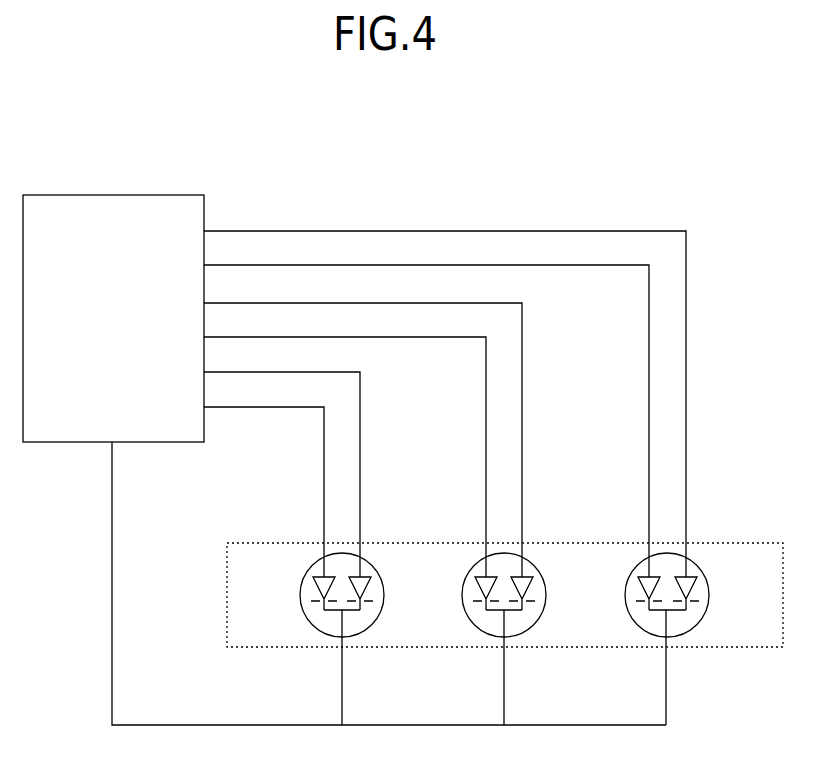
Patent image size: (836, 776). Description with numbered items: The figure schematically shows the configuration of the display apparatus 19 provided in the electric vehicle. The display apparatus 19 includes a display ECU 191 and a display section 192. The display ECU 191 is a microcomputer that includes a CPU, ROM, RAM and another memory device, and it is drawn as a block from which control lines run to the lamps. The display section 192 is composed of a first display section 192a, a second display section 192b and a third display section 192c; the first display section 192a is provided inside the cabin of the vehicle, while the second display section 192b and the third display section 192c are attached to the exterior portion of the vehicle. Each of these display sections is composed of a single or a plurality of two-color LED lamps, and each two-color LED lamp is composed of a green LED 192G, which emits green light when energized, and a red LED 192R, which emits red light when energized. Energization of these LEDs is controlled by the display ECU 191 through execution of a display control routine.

The display apparatus 19 is at (316, 163).
The display ECU 191 is at (113, 195).
The display section 192 is at (227, 594).
The first display section 192a is at (312, 627).
The second display section 192b is at (474, 627).
The third display section 192c is at (637, 627).
The green LED 192G is at (320, 586).
The red LED 192R is at (365, 590).